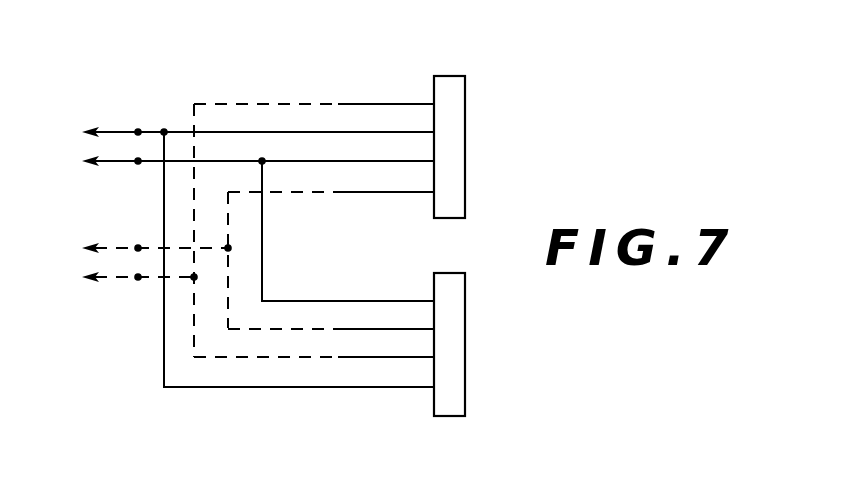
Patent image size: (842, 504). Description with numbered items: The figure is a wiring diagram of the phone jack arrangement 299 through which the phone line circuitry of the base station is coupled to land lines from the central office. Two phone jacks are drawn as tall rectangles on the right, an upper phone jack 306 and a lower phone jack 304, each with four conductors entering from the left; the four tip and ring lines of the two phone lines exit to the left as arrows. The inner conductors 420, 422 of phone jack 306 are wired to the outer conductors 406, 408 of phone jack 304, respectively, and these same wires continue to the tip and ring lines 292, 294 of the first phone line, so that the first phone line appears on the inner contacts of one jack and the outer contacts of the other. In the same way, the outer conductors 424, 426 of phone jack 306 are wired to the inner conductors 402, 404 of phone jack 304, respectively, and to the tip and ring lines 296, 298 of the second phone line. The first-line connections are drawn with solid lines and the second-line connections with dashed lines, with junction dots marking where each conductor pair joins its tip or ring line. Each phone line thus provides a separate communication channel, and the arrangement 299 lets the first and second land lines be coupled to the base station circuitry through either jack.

The phone jack arrangement 299 is at (488, 56).
The phone jack 306 is at (466, 118).
The phone jack 304 is at (466, 313).
The tip line 292 is at (115, 129).
The ring line 294 is at (115, 164).
The tip line 296 is at (115, 246).
The ring line 298 is at (115, 279).
The outer conductor 426 is at (429, 102).
The inner conductor 420 is at (429, 130).
The inner conductor 422 is at (429, 159).
The outer conductor 424 is at (429, 190).
The outer conductor 408 is at (429, 299).
The inner conductor 402 is at (429, 327).
The inner conductor 404 is at (429, 355).
The outer conductor 406 is at (429, 385).